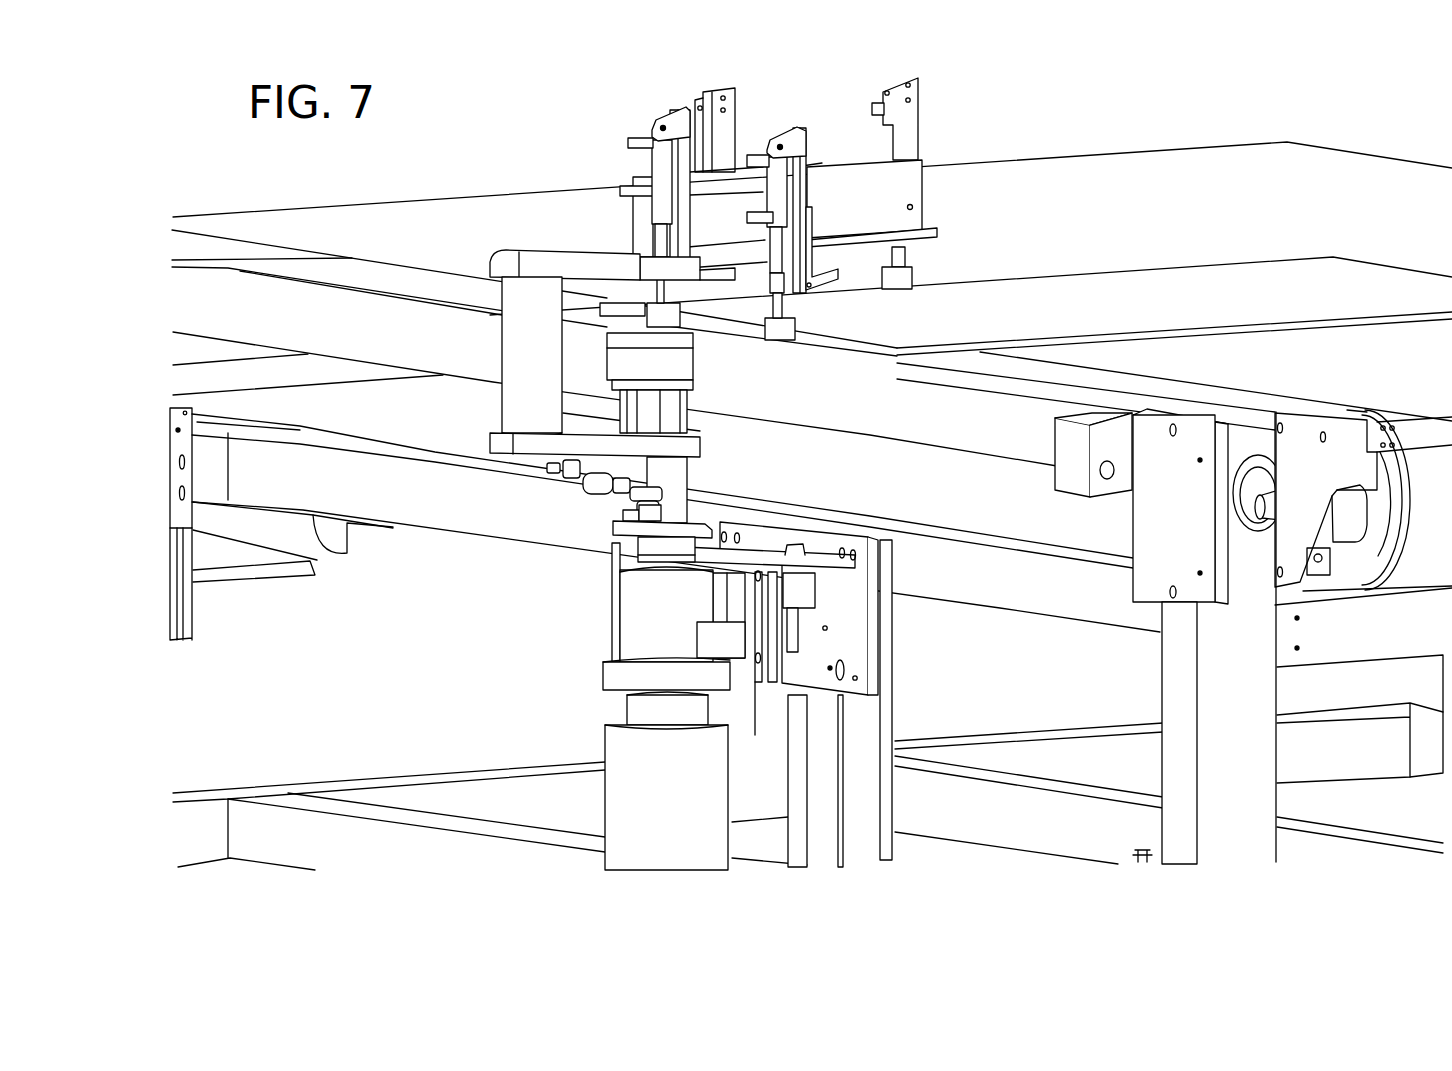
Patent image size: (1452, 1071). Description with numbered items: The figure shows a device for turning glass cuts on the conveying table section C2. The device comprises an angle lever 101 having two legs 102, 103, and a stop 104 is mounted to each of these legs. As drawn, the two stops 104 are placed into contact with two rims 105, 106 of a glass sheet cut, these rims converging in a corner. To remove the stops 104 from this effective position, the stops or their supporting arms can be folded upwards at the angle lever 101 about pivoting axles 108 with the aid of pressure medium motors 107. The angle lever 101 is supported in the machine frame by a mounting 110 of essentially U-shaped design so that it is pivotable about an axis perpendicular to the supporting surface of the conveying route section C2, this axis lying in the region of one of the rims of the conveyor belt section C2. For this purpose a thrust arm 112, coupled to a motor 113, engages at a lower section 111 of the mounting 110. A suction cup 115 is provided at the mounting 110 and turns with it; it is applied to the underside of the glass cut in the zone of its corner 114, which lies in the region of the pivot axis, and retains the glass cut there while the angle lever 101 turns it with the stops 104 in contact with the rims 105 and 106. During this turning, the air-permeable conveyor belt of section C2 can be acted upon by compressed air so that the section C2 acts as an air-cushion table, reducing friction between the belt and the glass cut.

The angle lever 101 is at (800, 114).
The leg of angle lever 102 is at (910, 177).
The leg of angle lever 103 is at (717, 206).
The stop 104 is at (907, 278).
The rim of glass sheet cut 105 is at (1088, 273).
The rim of glass sheet cut 106 is at (856, 350).
The pressure medium motor 107 is at (637, 170).
The pivoting axle 108 is at (803, 293).
The mounting 110 is at (515, 340).
The lower section of mounting 111 is at (528, 455).
The thrust arm 112 is at (592, 490).
The motor 113 is at (632, 617).
The corner of glass cut 114 is at (630, 300).
The suction cup 115 is at (690, 382).
The conveying table section C2 is at (1157, 158).